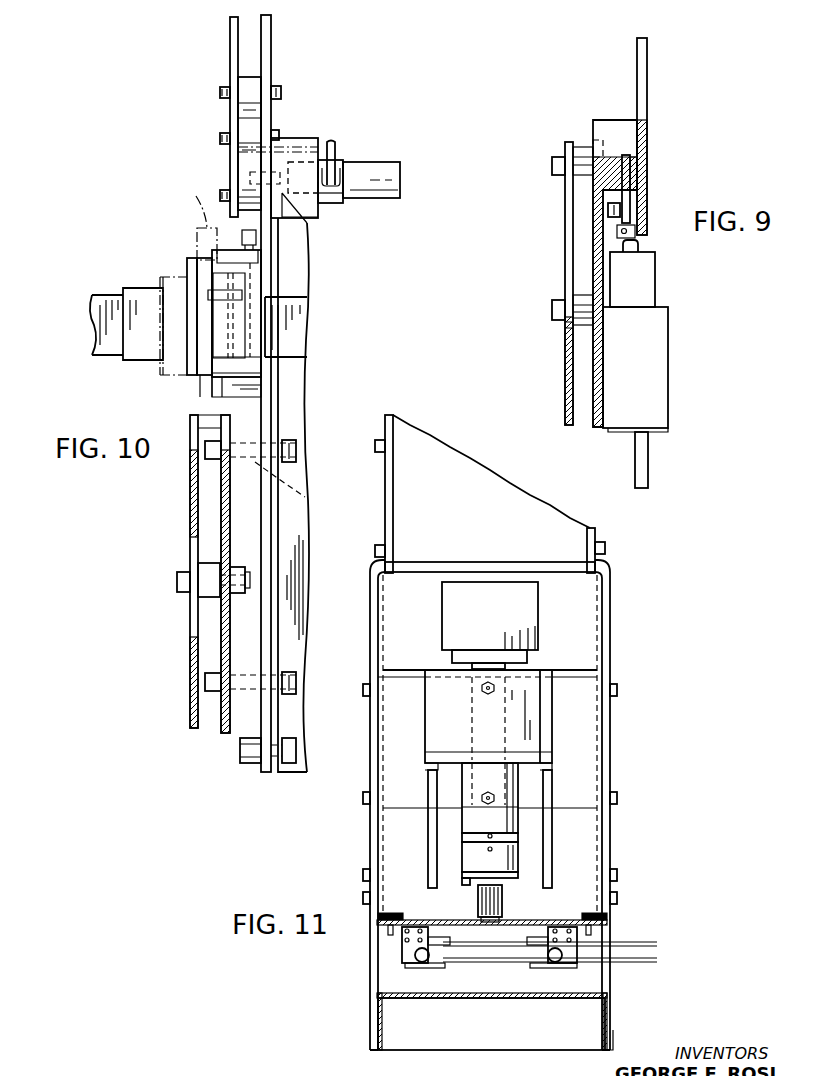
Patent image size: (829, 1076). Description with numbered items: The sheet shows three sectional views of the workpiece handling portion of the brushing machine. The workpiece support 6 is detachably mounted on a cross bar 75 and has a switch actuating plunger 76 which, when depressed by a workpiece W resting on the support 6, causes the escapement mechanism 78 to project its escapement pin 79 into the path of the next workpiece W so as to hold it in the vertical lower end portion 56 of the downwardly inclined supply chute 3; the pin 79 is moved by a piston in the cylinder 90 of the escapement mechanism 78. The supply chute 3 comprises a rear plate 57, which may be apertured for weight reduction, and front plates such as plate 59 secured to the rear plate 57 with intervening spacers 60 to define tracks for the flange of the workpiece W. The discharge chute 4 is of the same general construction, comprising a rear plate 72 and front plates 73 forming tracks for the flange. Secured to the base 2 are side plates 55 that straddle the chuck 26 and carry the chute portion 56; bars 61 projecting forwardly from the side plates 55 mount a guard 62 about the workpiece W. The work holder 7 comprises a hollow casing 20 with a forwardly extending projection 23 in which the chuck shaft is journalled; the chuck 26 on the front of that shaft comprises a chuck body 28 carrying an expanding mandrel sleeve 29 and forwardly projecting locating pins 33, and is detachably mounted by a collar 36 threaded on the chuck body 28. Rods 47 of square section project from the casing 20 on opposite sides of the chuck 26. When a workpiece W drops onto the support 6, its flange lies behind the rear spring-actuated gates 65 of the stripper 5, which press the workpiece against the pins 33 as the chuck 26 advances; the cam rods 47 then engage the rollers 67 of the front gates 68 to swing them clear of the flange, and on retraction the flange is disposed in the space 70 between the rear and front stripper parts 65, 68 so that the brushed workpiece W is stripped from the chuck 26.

In FIG. 11, the base 2 is at (616, 1023).
In FIG. 10, the supply chute 3 is at (273, 70).
In FIG. 10, the discharge chute 4 is at (190, 678).
In FIG. 9, the discharge chute 4 is at (565, 372).
In FIG. 10, the stripper 5 is at (202, 352).
In FIG. 11, the stripper 5 is at (398, 950).
In FIG. 9, the workpiece support 6 is at (649, 172).
In FIG. 11, the work holder 7 is at (554, 722).
In FIG. 11, the hollow casing 20 is at (550, 738).
In FIG. 11, the forwardly extending projection 23 is at (519, 825).
In FIG. 11, the workpiece gripping chuck 26 is at (503, 906).
In FIG. 11, the chuck body 28 is at (519, 876).
In FIG. 11, the expanding mandrel sleeve 29 is at (503, 868).
In FIG. 11, the locating pins 33 is at (462, 883).
In FIG. 11, the collar 36 is at (520, 860).
In FIG. 11, the rods 47 is at (428, 790).
In FIG. 10, the side plates 55 is at (286, 378).
In FIG. 11, the side plates 55 is at (370, 760).
In FIG. 10, the lower end portion 56 is at (239, 160).
In FIG. 10, the rear plate 57 is at (272, 110).
In FIG. 9, the rear plate 57 is at (649, 190).
In FIG. 10, the front plate 59 is at (219, 95).
In FIG. 10, the spacers 60 is at (246, 80).
In FIG. 10, the bars 61 is at (106, 302).
In FIG. 11, the bars 61 is at (371, 975).
In FIG. 11, the guard 62 is at (378, 1015).
In FIG. 10, the rear stripper parts 65 is at (256, 323).
In FIG. 11, the rear stripper parts 65 is at (500, 906).
In FIG. 10, the rollers 67 is at (205, 392).
In FIG. 11, the rollers 67 is at (420, 962).
In FIG. 10, the front stripper parts 68 is at (190, 262).
In FIG. 11, the front stripper parts 68 is at (434, 966).
In FIG. 11, the space 70 is at (440, 952).
In FIG. 10, the rear plate 72 is at (227, 518).
In FIG. 9, the rear plate 72 is at (593, 256).
In FIG. 10, the front plates 73 is at (190, 517).
In FIG. 9, the front plates 73 is at (573, 331).
In FIG. 10, the cross bar 75 is at (306, 498).
In FIG. 9, the cross bar 75 is at (632, 205).
In FIG. 9, the switch actuating plunger 76 is at (640, 148).
In FIG. 10, the escapement mechanism 78 is at (351, 160).
In FIG. 10, the escapement pin 79 is at (283, 156).
In FIG. 10, the cylinder 90 is at (396, 182).
In FIG. 10, the workpiece W is at (196, 219).